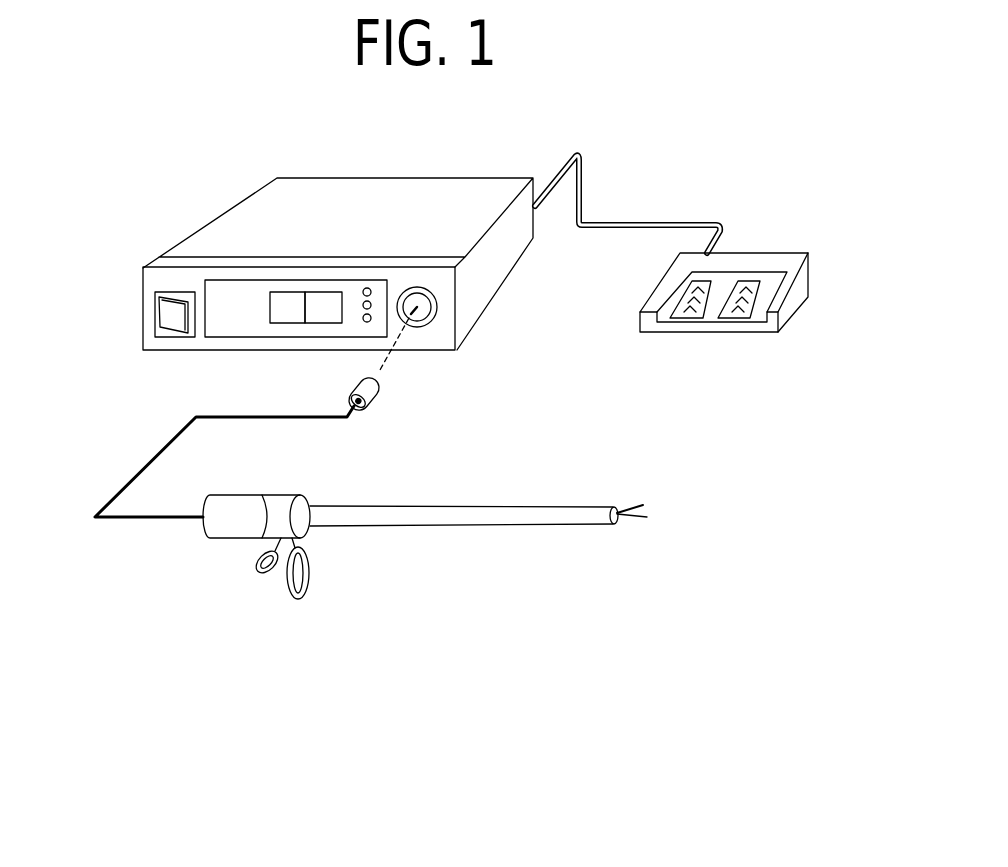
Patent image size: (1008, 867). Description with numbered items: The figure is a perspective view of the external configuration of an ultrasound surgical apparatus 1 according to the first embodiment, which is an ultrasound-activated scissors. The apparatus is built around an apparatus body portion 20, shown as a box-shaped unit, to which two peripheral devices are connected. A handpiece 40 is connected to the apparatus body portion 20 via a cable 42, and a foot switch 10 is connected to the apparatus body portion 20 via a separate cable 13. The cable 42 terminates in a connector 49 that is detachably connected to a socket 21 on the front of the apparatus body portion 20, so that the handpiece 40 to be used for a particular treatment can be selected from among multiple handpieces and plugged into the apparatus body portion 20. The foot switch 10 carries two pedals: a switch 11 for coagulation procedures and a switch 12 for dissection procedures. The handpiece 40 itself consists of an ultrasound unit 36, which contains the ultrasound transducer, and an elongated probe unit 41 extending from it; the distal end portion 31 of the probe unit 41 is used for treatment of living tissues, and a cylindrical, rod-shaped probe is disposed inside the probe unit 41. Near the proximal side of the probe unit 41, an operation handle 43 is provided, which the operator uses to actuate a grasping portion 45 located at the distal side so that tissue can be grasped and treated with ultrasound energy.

The ultrasound surgical apparatus 1 is at (728, 140).
The foot switch 10 is at (775, 253).
The switch for coagulation procedures 11 is at (688, 322).
The switch for dissection procedures 12 is at (738, 322).
The cable 13 is at (663, 220).
The apparatus body portion 20 is at (433, 178).
The socket 21 is at (437, 306).
The distal end portion 31 is at (637, 527).
The ultrasound unit 36 is at (243, 493).
The handpiece 40 is at (407, 492).
The probe unit 41 is at (453, 527).
The cable 42 is at (148, 457).
The operation handle 43 is at (310, 575).
The grasping portion 45 is at (633, 503).
The connector 49 is at (373, 402).